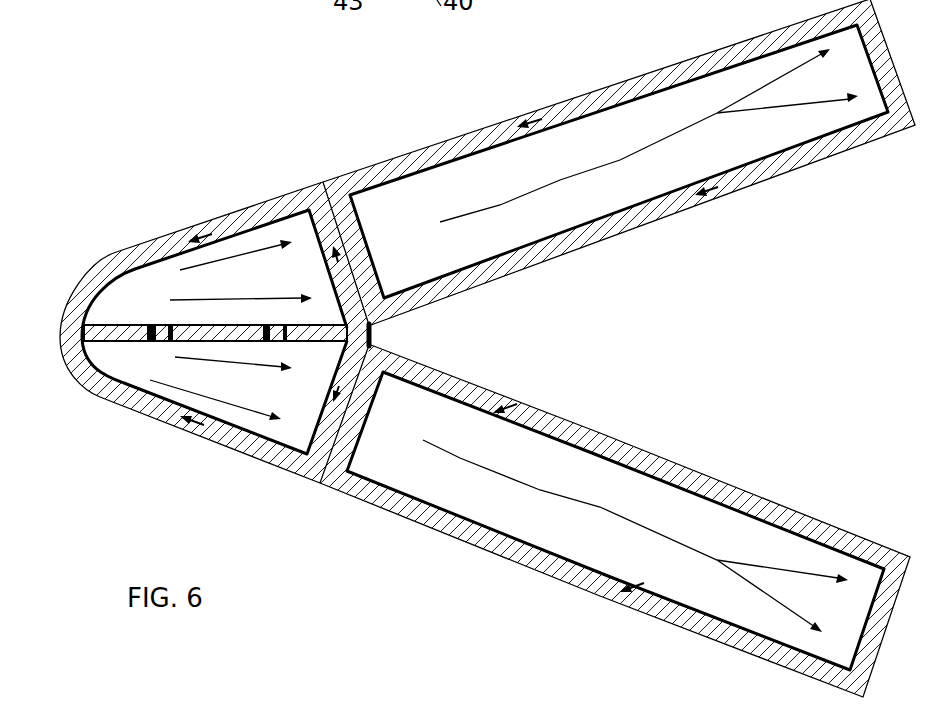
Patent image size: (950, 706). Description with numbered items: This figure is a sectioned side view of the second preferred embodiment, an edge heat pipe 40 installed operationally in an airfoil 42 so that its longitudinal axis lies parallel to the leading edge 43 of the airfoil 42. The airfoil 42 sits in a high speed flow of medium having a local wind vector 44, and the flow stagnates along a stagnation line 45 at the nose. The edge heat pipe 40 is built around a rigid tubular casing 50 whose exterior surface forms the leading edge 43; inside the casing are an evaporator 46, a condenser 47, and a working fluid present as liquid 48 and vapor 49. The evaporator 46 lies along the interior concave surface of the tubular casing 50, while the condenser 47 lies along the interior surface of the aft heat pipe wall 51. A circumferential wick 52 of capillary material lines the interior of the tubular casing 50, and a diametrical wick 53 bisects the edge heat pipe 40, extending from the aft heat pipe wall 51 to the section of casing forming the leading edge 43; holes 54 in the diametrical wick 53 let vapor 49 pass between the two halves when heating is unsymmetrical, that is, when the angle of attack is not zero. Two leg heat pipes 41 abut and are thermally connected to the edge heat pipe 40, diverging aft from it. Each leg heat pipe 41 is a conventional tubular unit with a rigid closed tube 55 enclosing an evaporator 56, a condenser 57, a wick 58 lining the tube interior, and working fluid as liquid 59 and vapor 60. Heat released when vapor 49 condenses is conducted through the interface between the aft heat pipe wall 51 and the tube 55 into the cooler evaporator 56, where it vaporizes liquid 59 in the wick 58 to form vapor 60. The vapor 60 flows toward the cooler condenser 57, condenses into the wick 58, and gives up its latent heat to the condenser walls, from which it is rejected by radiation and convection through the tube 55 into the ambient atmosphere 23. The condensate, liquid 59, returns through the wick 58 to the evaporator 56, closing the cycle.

The ambient atmosphere 23 is at (363, 126).
The edge heat pipe 40 is at (97, 244).
The leg heat pipes 41 is at (752, 479).
The airfoil 42 is at (299, 508).
The leading edge 43 is at (56, 360).
The local wind vector 44 is at (62, 332).
The stagnation line 45 is at (61, 329).
The evaporator 46 is at (128, 317).
The condenser 47 is at (318, 291).
The liquid 48 is at (258, 228).
The vapor 49 is at (212, 298).
The tubular casing 50 is at (152, 419).
The aft heat pipe wall 51 is at (377, 334).
The circumferential wick 52 is at (158, 242).
The diametrical wick 53 is at (337, 341).
The holes 54 is at (272, 324).
The closed tube 55 is at (545, 404).
The evaporator 56 is at (408, 224).
The condenser 57 is at (868, 84).
The wick 58 is at (408, 284).
The liquid 59 is at (587, 112).
The vapor 60 is at (528, 192).